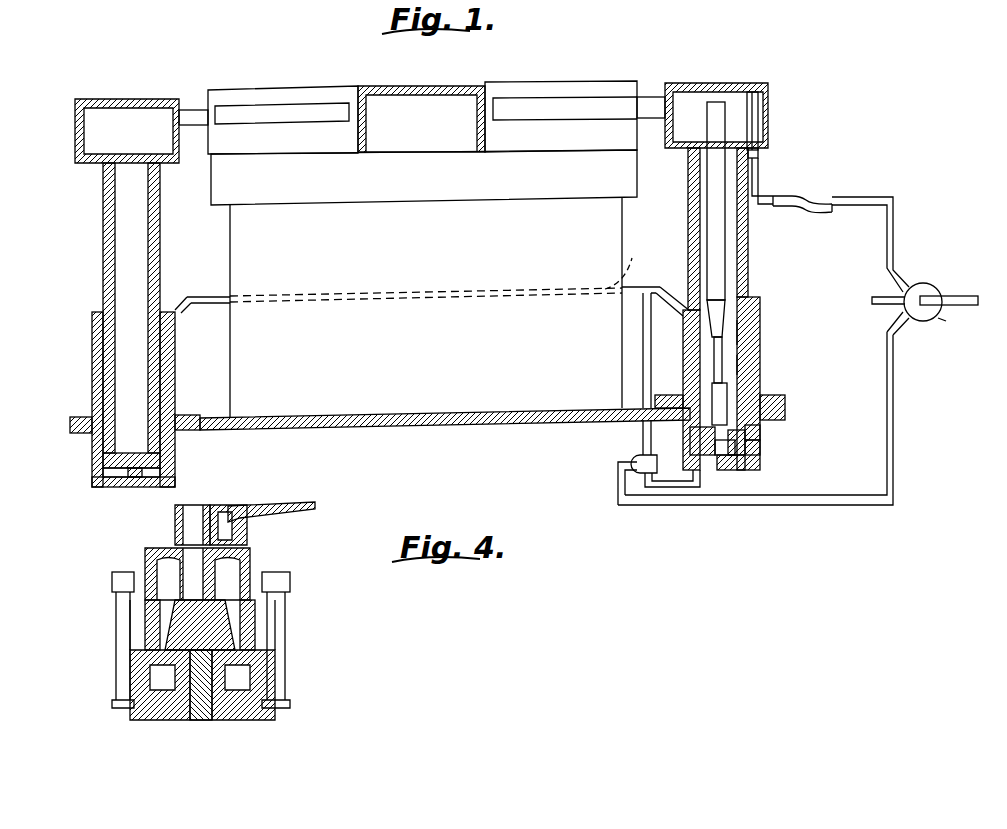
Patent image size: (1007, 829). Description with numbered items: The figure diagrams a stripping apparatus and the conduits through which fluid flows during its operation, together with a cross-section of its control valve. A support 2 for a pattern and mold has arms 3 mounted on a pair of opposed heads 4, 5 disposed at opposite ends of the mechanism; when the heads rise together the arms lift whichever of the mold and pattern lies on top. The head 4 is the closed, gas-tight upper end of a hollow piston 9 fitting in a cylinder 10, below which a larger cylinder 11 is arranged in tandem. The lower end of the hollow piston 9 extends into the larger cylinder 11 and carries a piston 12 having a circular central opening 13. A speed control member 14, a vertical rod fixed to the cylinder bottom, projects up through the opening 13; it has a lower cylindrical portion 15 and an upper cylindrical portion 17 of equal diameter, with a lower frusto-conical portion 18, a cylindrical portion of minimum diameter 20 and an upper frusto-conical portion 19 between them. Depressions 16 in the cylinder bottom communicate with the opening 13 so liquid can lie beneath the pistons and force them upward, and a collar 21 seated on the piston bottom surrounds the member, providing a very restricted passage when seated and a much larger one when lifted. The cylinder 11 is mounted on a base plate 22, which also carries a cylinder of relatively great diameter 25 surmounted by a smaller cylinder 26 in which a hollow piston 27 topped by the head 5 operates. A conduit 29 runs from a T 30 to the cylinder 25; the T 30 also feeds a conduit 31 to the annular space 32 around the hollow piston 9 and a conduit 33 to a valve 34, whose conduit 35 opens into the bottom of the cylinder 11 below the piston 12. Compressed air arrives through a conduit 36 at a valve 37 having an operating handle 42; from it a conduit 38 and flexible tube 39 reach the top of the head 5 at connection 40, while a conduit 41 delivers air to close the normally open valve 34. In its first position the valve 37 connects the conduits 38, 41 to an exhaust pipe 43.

In FIG. 1, the support 2 is at (287, 95).
In FIG. 1, the arms 3 is at (187, 109).
In FIG. 1, the head 4 is at (707, 84).
In FIG. 1, the head 5 is at (130, 99).
In FIG. 1, the hollow piston 9 is at (747, 251).
In FIG. 1, the cylinder 10 is at (740, 266).
In FIG. 1, the larger cylinder 11 is at (745, 365).
In FIG. 1, the piston 12 is at (760, 446).
In FIG. 1, the circular central opening 13 is at (760, 452).
In FIG. 1, the speed control member 14 is at (735, 470).
In FIG. 1, the lower cylindrical portion 15 is at (690, 441).
In FIG. 1, the depressions 16 is at (710, 470).
In FIG. 1, the upper cylindrical portion 17 is at (727, 182).
In FIG. 1, the lower frusto-conical portion 18 is at (728, 385).
In FIG. 1, the upper frusto-conical portion 19 is at (724, 319).
In FIG. 1, the cylindrical portion of minimum diameter 20 is at (723, 351).
In FIG. 1, the collar 21 is at (760, 433).
In FIG. 1, the base plate 22 is at (440, 421).
In FIG. 1, the cylinder of relatively great diameter 25 is at (175, 356).
In FIG. 1, the cylinder of smaller diameter 26 is at (160, 233).
In FIG. 1, the hollow piston 27 is at (158, 384).
In FIG. 1, the conduit 29 is at (629, 262).
In FIG. 1, the T 30 is at (645, 286).
In FIG. 1, the conduit 31 is at (670, 300).
In FIG. 1, the annular space 32 is at (740, 334).
In FIG. 1, the conduit 33 is at (644, 351).
In FIG. 1, the valve 34 is at (637, 458).
In FIG. 1, the conduit 35 is at (663, 495).
In FIG. 1, the conduit 36 is at (946, 320).
In FIG. 1, the valve 37 is at (930, 320).
In FIG. 4, the valve 37 is at (145, 556).
In FIG. 1, the conduit 38 is at (893, 236).
In FIG. 1, the flexible tube 39 is at (803, 206).
In FIG. 1, the connection at top of head 40 is at (754, 92).
In FIG. 1, the conduit 41 is at (887, 389).
In FIG. 1, the operating handle 42 is at (958, 296).
In FIG. 1, the exhaust pipe 43 is at (875, 298).